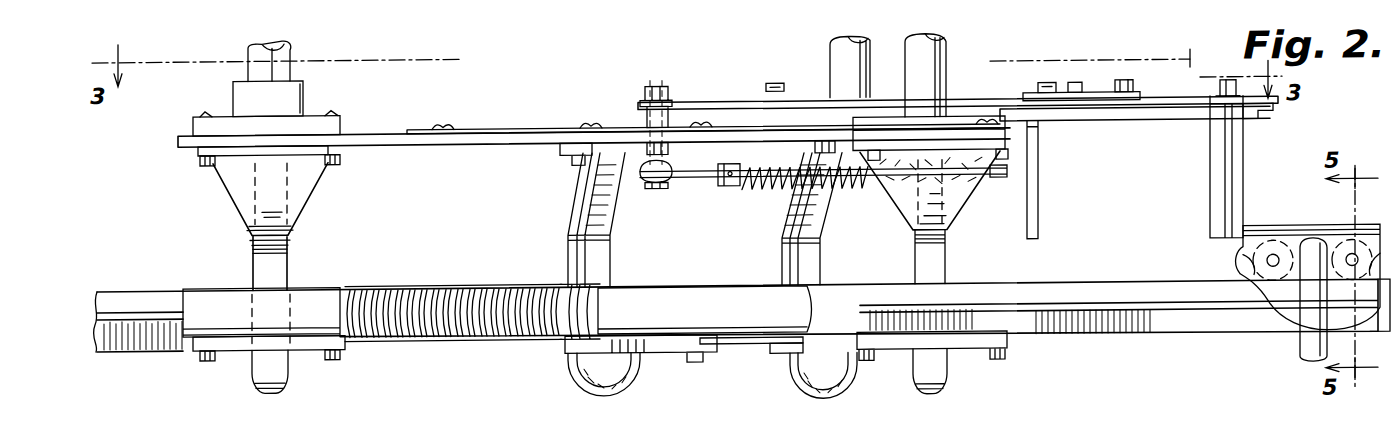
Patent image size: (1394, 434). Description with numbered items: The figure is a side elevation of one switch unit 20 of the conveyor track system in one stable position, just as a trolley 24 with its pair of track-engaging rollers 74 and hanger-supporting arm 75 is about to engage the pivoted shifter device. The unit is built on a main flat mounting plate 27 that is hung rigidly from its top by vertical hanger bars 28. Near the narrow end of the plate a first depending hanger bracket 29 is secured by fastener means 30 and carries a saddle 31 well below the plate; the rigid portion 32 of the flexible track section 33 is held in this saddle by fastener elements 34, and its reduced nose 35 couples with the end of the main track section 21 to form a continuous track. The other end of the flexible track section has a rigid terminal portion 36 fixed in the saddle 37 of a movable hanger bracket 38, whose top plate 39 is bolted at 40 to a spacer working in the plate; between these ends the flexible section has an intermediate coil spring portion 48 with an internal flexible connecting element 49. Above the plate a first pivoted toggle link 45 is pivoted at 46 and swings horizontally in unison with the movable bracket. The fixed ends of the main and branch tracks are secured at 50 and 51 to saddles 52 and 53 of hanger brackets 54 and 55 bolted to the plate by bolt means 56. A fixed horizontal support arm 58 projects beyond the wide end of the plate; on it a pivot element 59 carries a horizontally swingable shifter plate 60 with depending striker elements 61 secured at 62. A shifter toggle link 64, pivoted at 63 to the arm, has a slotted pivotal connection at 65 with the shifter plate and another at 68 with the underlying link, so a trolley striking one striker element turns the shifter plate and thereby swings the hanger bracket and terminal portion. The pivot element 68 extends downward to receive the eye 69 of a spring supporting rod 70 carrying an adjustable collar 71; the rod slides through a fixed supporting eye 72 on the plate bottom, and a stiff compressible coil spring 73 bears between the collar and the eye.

The switch unit 20 is at (534, 121).
The main track section 21 is at (106, 352).
The trolley 24 is at (1264, 238).
The main flat mounting plate 27 is at (402, 150).
The vertical hanger bars 28 is at (290, 66).
The first depending hanger bracket 29 is at (250, 262).
The fastener means 30 is at (340, 119).
The saddle 31 is at (298, 348).
The rigid portion 32 is at (305, 298).
The flexible track section 33 is at (478, 344).
The fastener elements 34 is at (212, 362).
The reduced nose 35 is at (152, 342).
The rigid terminal portion 36 is at (772, 334).
The saddle 37 is at (656, 358).
The movable hanger bracket 38 is at (612, 262).
The top plate 39 is at (585, 154).
The bolt 40 is at (590, 128).
The first pivoted toggle link 45 is at (484, 132).
The pivot 46 is at (442, 129).
The intermediate coil spring portion 48 is at (474, 292).
The internal flexible connecting element 49 is at (414, 296).
The fastener 50 is at (868, 368).
The fastener 51 is at (804, 360).
The saddle 52 is at (948, 350).
The saddle 53 is at (778, 360).
The hanger bracket 54 is at (945, 266).
The hanger bracket 55 is at (812, 258).
The bolt means 56 is at (986, 128).
The fixed horizontal support arm 58 is at (1108, 130).
The pivot element 59 is at (1268, 126).
The shifter plate 60 is at (1166, 109).
The striker elements 61 is at (1240, 172).
The fastening 62 is at (1124, 90).
The pivot 63 is at (773, 90).
The shifter toggle link 64 is at (806, 107).
The slotted pivotal connection 65 is at (1047, 92).
The pivot element 68 is at (655, 110).
The open head or eye 69 is at (650, 190).
The spring supporting rod 70 is at (704, 186).
The adjustable spring positioning collar 71 is at (732, 192).
The fixed supporting eye 72 is at (968, 190).
The compressible coil spring 73 is at (856, 192).
The track-engaging rollers 74 is at (1250, 271).
The arm 75 is at (1300, 358).